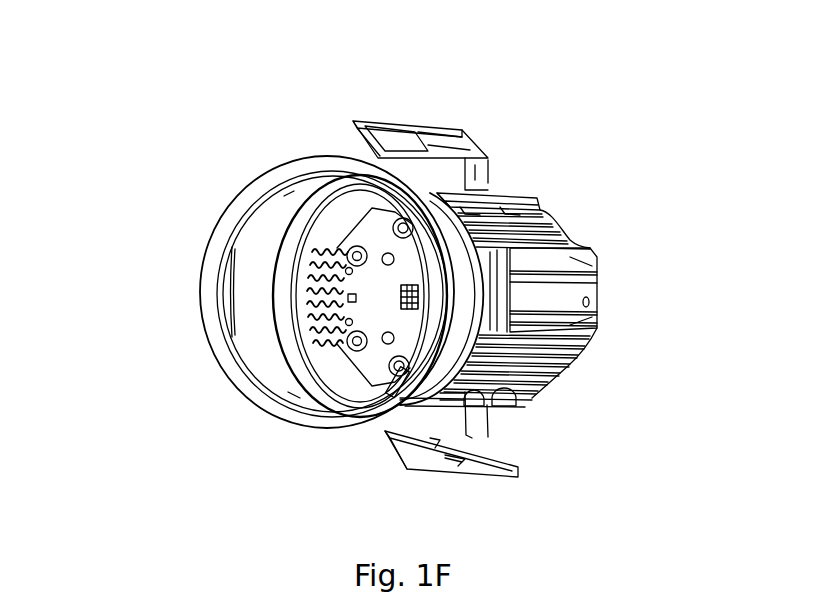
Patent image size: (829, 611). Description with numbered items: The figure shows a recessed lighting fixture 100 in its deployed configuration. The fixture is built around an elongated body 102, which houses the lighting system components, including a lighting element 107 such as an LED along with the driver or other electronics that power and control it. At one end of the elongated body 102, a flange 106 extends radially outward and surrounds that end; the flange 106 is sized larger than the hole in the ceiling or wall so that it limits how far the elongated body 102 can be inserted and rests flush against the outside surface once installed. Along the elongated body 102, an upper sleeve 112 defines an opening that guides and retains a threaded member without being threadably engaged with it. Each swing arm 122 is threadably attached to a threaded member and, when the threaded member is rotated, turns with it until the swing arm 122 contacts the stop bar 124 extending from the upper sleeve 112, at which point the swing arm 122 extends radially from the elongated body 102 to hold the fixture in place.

The recessed lighting fixture 100 is at (150, 120).
The elongated body 102 is at (597, 302).
The flange 106 is at (215, 242).
The lighting element 107 is at (400, 300).
The upper sleeve 112 is at (515, 396).
The swing arm 122 is at (419, 136).
The stop bar 124 is at (505, 199).